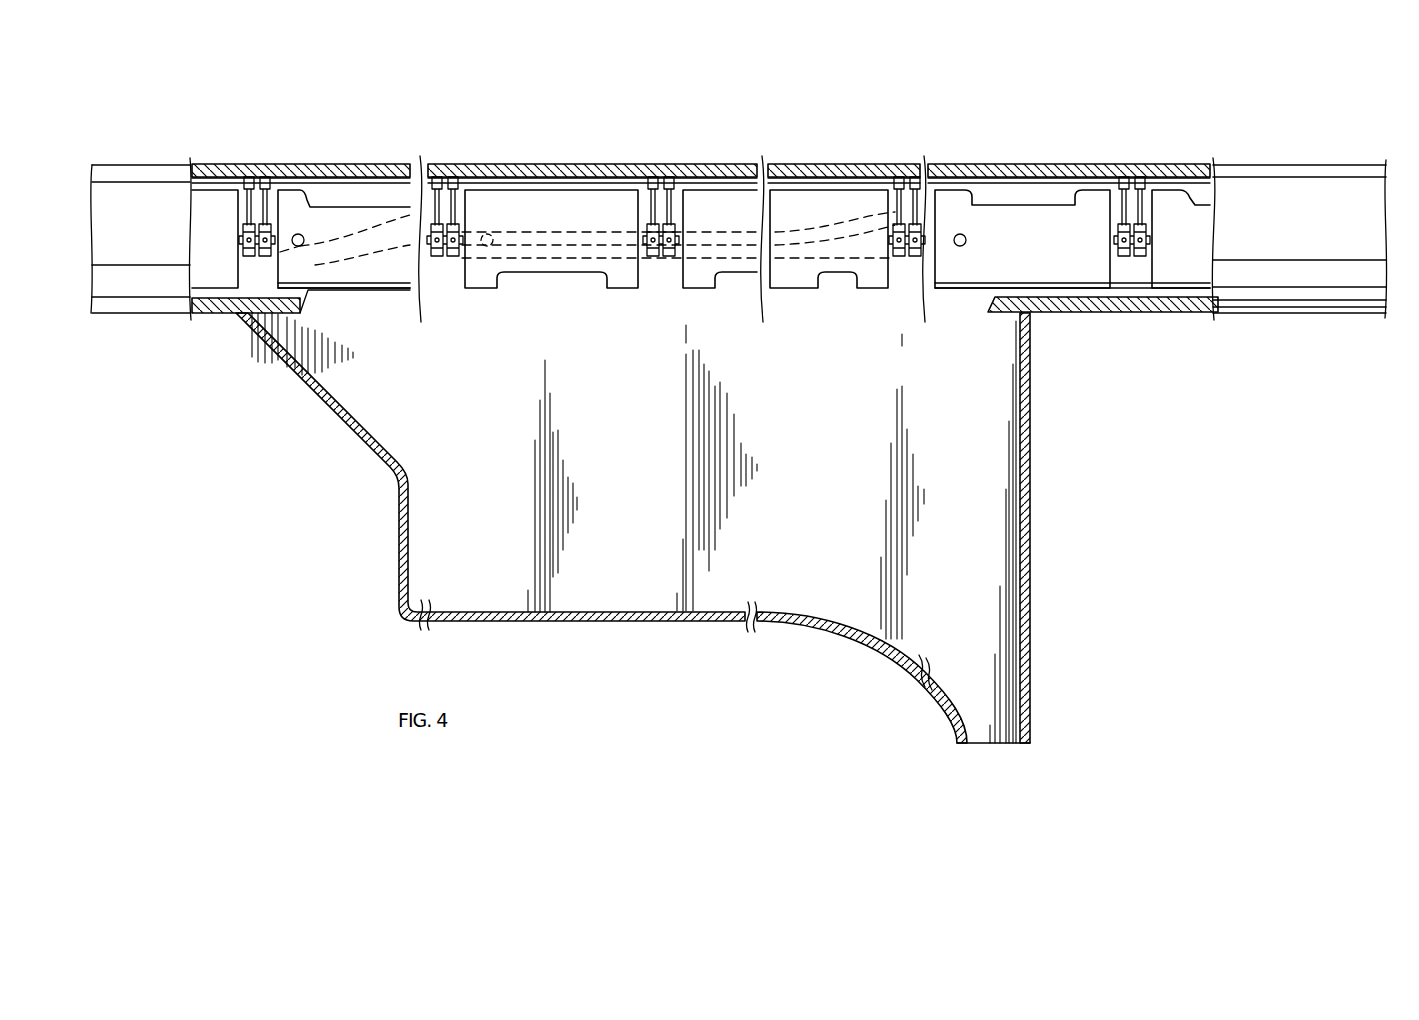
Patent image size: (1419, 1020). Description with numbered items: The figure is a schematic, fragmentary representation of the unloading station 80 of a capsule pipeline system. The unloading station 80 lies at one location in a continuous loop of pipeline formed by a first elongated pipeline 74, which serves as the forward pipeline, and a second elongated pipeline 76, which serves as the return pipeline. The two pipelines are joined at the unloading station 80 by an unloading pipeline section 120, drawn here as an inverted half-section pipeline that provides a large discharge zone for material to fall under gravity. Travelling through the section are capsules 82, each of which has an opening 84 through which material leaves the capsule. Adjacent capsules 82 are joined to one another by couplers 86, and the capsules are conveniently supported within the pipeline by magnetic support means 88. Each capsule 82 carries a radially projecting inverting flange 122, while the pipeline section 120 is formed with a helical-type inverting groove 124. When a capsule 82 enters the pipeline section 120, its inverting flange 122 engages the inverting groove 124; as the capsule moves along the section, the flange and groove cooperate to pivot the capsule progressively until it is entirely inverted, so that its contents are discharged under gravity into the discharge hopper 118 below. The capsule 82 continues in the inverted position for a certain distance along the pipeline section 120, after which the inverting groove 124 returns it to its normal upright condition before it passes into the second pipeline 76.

The first elongated pipeline 74 is at (127, 165).
The second elongated pipeline 76 is at (1290, 190).
The unloading station 80 is at (1018, 128).
The capsule 82 is at (384, 284).
The opening 84 is at (1022, 204).
The coupler 86 is at (253, 262).
The magnetic support means 88 is at (265, 168).
The discharge hopper 118 is at (1031, 571).
The unloading pipeline section 120 is at (524, 166).
The inverting flange 122 is at (298, 247).
The inverting groove 124 is at (355, 230).